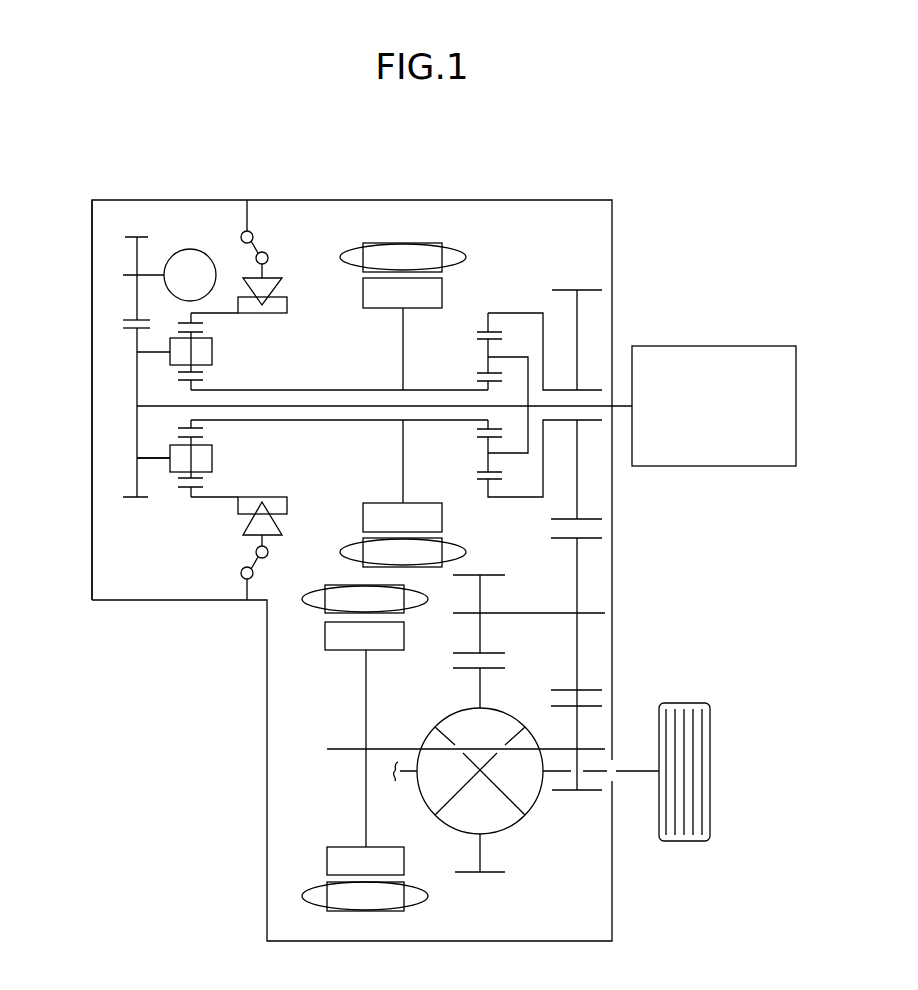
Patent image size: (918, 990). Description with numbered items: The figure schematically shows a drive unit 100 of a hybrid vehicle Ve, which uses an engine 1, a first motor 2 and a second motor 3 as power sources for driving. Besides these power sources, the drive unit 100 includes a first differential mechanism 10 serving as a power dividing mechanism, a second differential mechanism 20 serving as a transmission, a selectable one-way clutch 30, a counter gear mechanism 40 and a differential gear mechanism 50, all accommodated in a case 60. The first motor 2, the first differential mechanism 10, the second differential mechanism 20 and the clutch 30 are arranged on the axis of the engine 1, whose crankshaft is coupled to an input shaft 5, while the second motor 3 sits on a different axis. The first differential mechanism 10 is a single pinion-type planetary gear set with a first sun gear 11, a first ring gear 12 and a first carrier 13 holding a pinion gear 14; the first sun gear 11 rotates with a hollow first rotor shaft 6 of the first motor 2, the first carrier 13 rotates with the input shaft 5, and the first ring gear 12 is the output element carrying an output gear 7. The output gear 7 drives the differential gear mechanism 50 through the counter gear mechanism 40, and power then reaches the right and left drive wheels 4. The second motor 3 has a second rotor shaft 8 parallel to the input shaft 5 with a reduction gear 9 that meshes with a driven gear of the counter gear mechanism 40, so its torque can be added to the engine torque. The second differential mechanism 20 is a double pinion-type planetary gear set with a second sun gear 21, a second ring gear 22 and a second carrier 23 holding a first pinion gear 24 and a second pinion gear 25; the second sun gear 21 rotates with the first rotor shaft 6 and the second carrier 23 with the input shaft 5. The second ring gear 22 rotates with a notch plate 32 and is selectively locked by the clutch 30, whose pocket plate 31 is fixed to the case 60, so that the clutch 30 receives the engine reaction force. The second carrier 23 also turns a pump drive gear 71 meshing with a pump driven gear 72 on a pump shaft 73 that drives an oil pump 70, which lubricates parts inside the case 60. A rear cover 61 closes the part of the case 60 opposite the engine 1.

The engine 1 is at (755, 346).
The first motor 2 is at (403, 240).
The second motor 3 is at (317, 628).
The drive wheels 4 is at (695, 703).
The input shaft 5 is at (600, 406).
The first rotor shaft 6 is at (325, 390).
The output gear 7 is at (590, 520).
The second rotor shaft 8 is at (390, 749).
The reduction gear 9 is at (590, 710).
The first differential mechanism 10 is at (508, 298).
The first sun gear 11 is at (477, 381).
The first ring gear 12 is at (477, 332).
The first carrier 13 is at (512, 357).
The pinion gear 14 is at (477, 472).
The second differential mechanism 20 is at (180, 505).
The second sun gear 21 is at (200, 380).
The second ring gear 22 is at (200, 323).
The second carrier 23 is at (165, 458).
The first pinion gear 24 is at (200, 428).
The second pinion gear 25 is at (200, 487).
The selectable one-way clutch 30 is at (262, 233).
The pocket plate 31 is at (247, 212).
The notch plate 32 is at (287, 305).
The counter gear mechanism 40 is at (600, 591).
The differential gear mechanism 50 is at (513, 880).
The case 60 is at (578, 198).
The rear cover 61 is at (92, 213).
The oil pump 70 is at (190, 248).
The pump drive gear 71 is at (123, 329).
The pump driven gear 72 is at (123, 319).
The pump shaft 73 is at (153, 273).
The drive unit 100 is at (677, 188).
The hybrid vehicle Ve is at (630, 150).